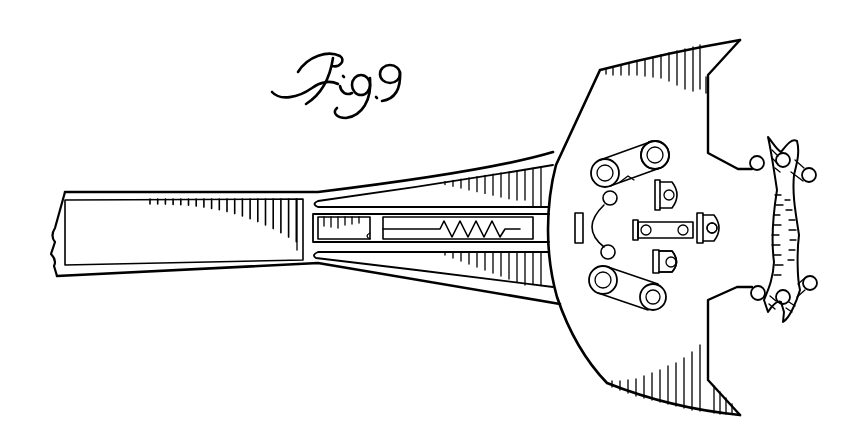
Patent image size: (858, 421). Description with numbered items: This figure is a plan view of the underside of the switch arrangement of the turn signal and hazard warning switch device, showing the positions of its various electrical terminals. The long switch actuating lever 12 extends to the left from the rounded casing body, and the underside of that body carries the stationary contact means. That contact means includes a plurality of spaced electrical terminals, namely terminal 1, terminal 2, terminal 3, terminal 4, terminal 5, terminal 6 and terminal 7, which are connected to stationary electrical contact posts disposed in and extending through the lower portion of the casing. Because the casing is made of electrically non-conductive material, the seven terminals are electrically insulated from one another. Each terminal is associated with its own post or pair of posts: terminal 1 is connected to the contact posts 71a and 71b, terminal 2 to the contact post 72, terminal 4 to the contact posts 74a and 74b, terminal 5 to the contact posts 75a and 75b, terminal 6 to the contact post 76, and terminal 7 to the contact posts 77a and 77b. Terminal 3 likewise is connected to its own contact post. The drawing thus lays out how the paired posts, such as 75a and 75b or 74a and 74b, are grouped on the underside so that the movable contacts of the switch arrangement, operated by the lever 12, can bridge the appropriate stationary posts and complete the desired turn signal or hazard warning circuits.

The electrical terminal 1 is at (575, 223).
The electrical terminal 2 is at (653, 262).
The electrical terminal 3 is at (664, 158).
The electrical terminal 4 is at (637, 287).
The electrical terminal 5 is at (637, 163).
The electrical terminal 6 is at (698, 245).
The electrical terminal 7 is at (657, 222).
The switch actuating lever 12 is at (207, 268).
The contact post 71a is at (603, 196).
The contact post 71b is at (601, 256).
The contact post 72 is at (675, 276).
The contact post 74a is at (600, 290).
The contact post 74b is at (654, 311).
The contact post 75a is at (600, 162).
The contact post 75b is at (657, 142).
The contact post 76 is at (720, 236).
The contact post 77a is at (634, 229).
The contact post 77b is at (688, 221).